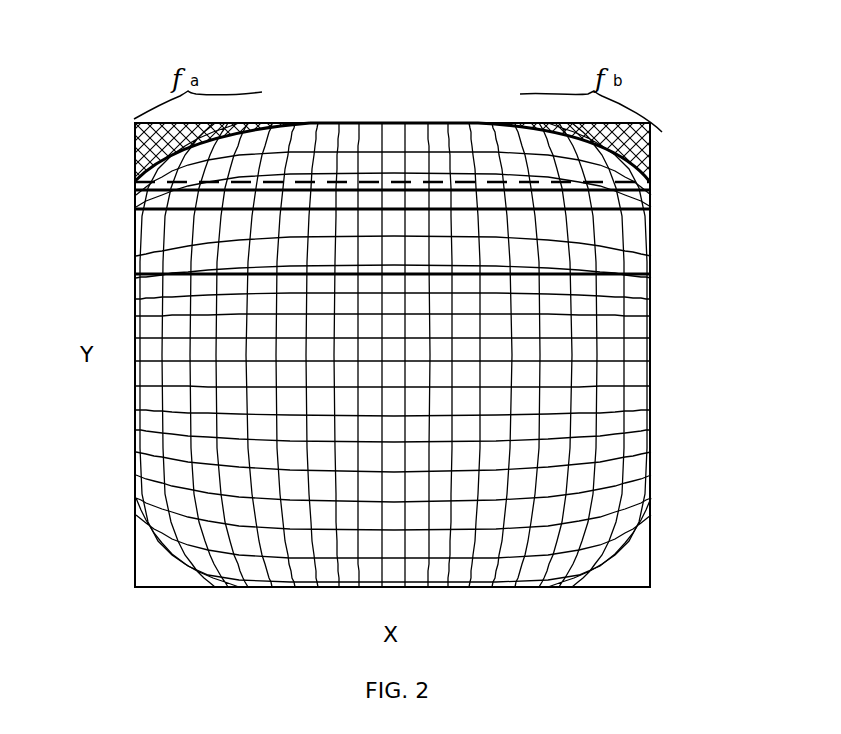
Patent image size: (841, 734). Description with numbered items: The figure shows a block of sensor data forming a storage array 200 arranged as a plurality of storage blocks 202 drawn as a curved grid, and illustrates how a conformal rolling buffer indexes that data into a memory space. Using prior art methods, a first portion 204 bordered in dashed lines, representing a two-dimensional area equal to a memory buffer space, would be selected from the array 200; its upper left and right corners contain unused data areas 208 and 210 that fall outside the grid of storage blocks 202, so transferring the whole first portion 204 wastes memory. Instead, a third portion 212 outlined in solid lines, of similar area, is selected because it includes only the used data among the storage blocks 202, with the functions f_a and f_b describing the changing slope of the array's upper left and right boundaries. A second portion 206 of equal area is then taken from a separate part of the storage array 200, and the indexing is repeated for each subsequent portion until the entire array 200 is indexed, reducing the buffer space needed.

The storage array 200 is at (93, 114).
The storage blocks 202 is at (150, 393).
The first portion 204 is at (652, 143).
The second portion 206 is at (652, 228).
The unused data area 208 is at (133, 162).
The unused data area 210 is at (652, 160).
The third portion 212 is at (133, 210).